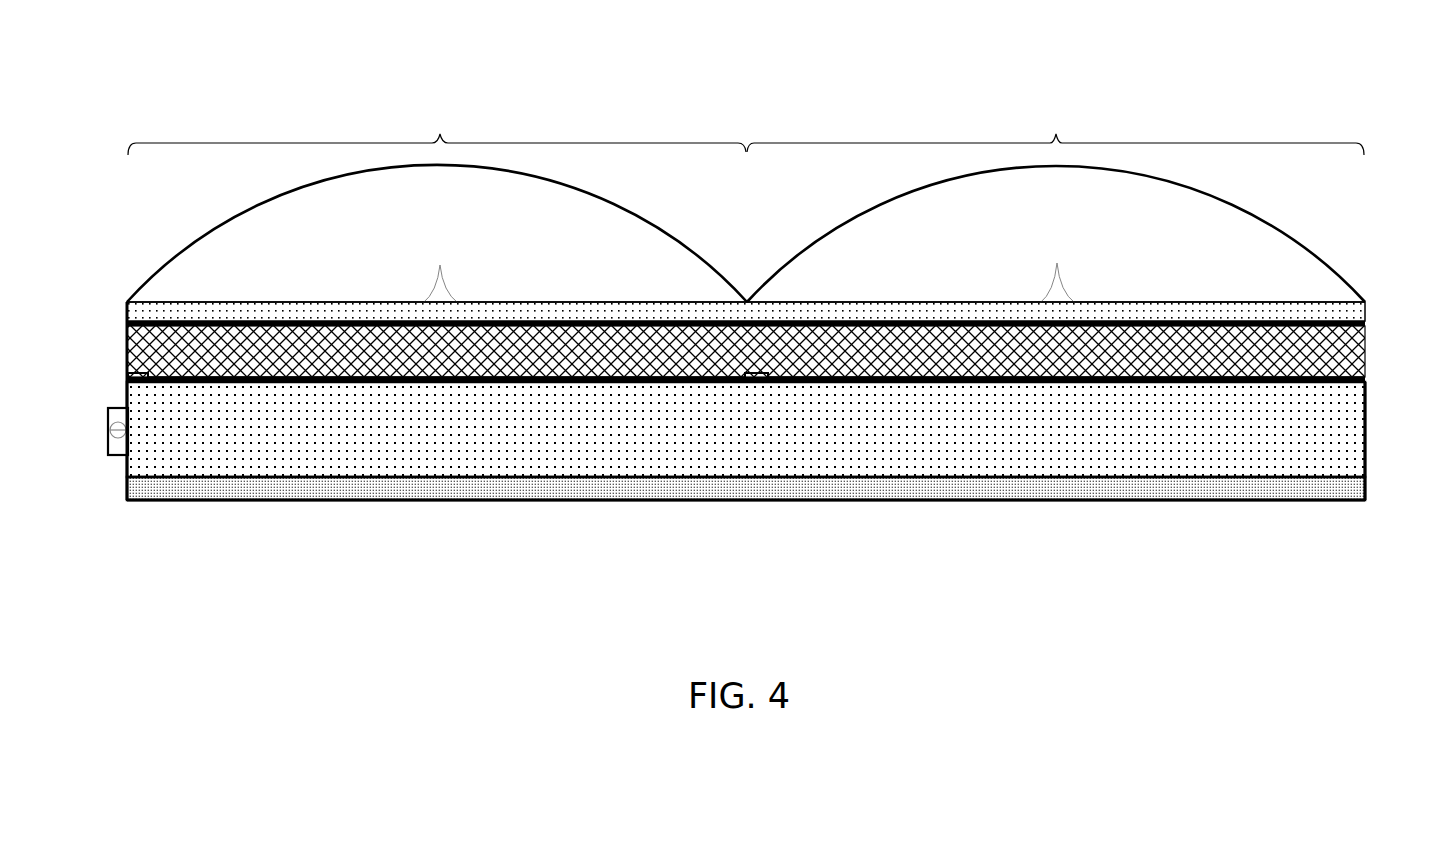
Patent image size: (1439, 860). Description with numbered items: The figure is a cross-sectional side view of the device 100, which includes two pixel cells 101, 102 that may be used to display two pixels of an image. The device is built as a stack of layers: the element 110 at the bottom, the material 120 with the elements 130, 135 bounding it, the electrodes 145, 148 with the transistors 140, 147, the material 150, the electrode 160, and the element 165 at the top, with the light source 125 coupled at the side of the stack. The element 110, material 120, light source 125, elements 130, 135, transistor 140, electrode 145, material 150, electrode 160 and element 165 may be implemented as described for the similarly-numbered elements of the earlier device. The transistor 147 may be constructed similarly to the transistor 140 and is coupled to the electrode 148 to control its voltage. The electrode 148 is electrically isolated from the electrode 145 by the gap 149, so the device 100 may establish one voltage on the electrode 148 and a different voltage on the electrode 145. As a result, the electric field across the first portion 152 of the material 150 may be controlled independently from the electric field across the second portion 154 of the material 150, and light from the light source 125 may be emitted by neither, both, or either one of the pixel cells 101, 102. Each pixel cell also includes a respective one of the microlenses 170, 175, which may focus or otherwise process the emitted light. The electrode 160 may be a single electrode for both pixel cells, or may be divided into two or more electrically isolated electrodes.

The device 100 is at (714, 56).
The pixel cell 101 is at (437, 129).
The pixel cell 102 is at (1055, 129).
The element 110 is at (1362, 488).
The material 120 is at (1360, 450).
The light source 125 is at (123, 457).
The element 130 is at (1363, 478).
The element 135 is at (1365, 415).
The transistor 140 is at (139, 383).
The electrode 145 is at (245, 382).
The transistor 147 is at (757, 383).
The electrode 148 is at (863, 383).
The gap 149 is at (744, 386).
The material 150 is at (1360, 353).
The first portion 152 is at (442, 267).
The second portion 154 is at (1059, 264).
The electrode 160 is at (1365, 324).
The element 165 is at (1362, 313).
The microlens 170 is at (618, 206).
The microlens 175 is at (1244, 208).